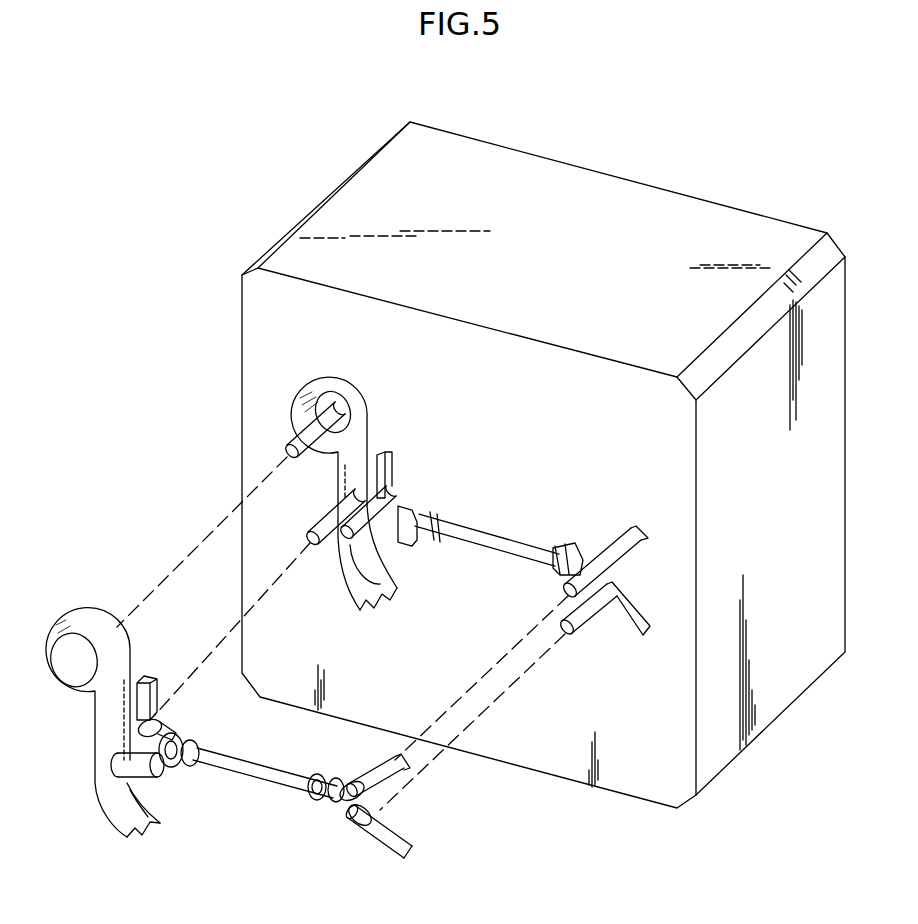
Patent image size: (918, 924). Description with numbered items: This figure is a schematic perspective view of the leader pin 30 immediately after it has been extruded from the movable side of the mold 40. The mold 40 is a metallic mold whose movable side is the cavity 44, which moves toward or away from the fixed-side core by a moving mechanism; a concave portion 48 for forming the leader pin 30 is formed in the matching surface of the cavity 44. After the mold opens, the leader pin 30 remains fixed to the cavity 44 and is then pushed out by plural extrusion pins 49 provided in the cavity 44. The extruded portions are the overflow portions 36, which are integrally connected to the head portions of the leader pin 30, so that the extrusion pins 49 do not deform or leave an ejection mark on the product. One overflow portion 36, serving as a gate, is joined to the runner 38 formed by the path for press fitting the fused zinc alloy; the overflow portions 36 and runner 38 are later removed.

The mold 40 is at (291, 147).
The cavity 44 is at (538, 154).
The concave portion 48 is at (481, 530).
The extrusion pins 49 is at (299, 441).
The runner 38 is at (122, 817).
The overflow portions 36 is at (165, 728).
The leader pin 30 is at (273, 788).